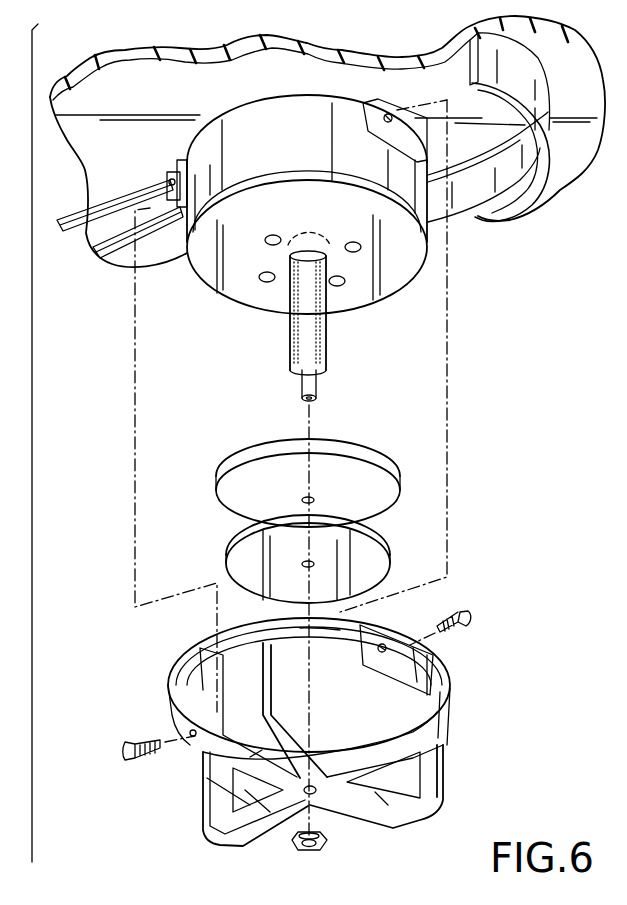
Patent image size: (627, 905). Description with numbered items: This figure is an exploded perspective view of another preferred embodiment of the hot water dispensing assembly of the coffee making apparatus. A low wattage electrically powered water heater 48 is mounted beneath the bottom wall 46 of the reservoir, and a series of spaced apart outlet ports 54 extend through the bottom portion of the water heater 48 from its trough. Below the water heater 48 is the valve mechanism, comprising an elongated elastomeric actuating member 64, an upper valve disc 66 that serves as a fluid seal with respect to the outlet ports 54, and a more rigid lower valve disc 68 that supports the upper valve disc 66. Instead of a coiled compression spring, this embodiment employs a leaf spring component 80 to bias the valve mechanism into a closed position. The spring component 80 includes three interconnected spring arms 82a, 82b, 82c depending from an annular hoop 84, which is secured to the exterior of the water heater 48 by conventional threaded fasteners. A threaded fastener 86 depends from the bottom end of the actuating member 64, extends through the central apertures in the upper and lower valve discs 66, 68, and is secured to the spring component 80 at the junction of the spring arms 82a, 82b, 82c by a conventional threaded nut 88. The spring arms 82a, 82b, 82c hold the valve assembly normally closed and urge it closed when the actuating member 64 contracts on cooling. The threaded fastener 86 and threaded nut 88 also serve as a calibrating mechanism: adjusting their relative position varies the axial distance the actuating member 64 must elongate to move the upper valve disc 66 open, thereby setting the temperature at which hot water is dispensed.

The bottom wall 46 is at (273, 67).
The water heater 48 is at (403, 267).
The outlet ports 54 is at (380, 325).
The actuating member 64 is at (318, 337).
The threaded fastener 86 is at (300, 387).
The upper valve disc 66 is at (387, 500).
The lower valve disc 68 is at (380, 558).
The leaf spring component 80 is at (136, 682).
The spring arm 82a is at (262, 745).
The spring arm 82b is at (255, 823).
The spring arm 82c is at (387, 815).
The annular hoop 84 is at (318, 630).
The threaded nut 88 is at (327, 849).